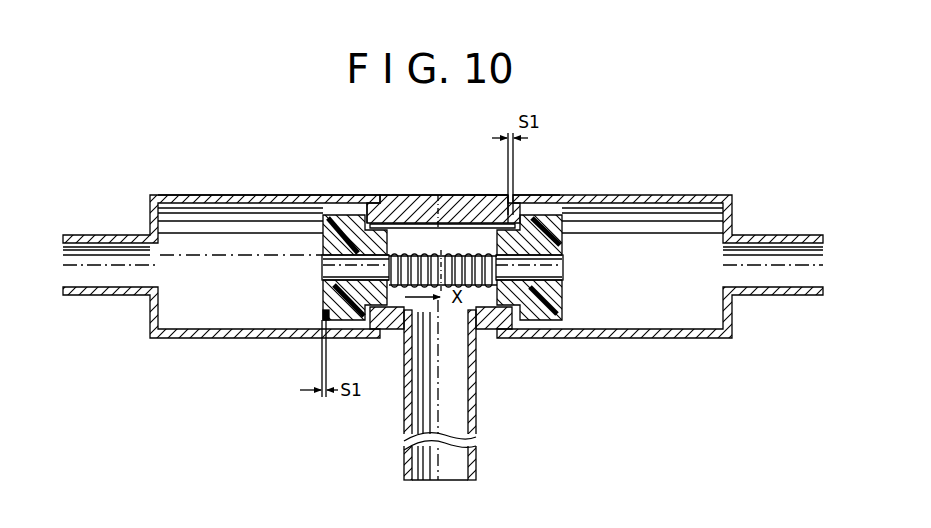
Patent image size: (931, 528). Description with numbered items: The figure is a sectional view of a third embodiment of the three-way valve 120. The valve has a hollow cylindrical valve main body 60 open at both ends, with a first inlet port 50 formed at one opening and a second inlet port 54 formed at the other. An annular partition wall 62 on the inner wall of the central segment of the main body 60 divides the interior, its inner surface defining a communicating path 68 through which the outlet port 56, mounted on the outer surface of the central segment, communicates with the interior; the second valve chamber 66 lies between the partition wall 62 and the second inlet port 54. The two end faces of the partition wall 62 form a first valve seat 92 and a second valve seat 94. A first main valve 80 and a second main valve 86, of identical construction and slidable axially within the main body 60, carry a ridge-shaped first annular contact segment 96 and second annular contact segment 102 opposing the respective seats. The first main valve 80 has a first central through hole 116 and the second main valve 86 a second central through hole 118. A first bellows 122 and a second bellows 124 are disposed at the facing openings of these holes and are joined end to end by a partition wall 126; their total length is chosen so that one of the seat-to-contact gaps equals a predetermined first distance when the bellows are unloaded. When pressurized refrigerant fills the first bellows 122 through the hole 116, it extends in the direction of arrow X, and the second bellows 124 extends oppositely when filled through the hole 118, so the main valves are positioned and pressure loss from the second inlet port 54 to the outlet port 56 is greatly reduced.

The first inlet port 50 is at (99, 235).
The second inlet port 54 is at (786, 235).
The outlet port 56 is at (476, 426).
The valve main body 60 is at (213, 195).
The partition wall 62 is at (411, 212).
The second valve chamber 66 is at (668, 320).
The communicating path 68 is at (485, 307).
The first main valve 80 is at (345, 319).
The second main valve 86 is at (562, 300).
The first valve seat 92 is at (372, 203).
The second valve seat 94 is at (511, 212).
The first annular contact segment 96 is at (366, 215).
The second annular contact segment 102 is at (540, 200).
The first central through hole 116 is at (328, 266).
The second central through hole 118 is at (553, 276).
The three-way valve 120 is at (271, 194).
The first bellows 122 is at (441, 205).
The second bellows 124 is at (477, 200).
The partition wall 126 is at (395, 240).